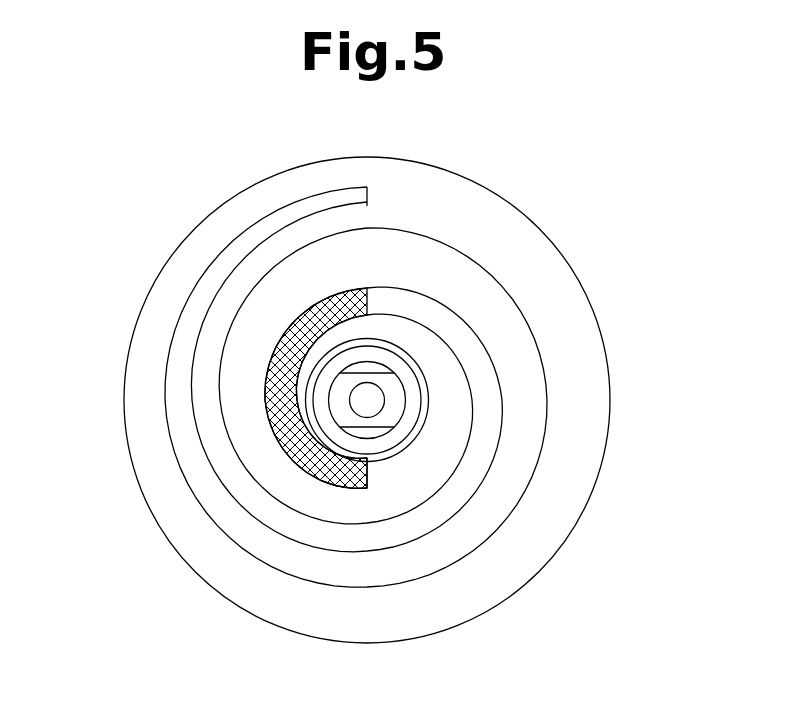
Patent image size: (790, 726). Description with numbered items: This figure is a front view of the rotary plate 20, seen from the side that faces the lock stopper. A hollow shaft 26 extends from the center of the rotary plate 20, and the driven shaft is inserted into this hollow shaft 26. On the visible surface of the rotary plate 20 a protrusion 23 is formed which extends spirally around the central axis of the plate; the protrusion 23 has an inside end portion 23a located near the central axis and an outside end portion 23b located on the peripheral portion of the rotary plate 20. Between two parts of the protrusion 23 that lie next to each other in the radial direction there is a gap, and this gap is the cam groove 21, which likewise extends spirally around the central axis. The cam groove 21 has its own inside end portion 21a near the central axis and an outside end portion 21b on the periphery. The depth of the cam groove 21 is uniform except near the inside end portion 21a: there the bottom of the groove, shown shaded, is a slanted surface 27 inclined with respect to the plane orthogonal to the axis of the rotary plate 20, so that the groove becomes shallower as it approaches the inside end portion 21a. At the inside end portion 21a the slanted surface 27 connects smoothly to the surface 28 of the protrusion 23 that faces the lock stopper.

The rotary plate 20 is at (495, 206).
The cam groove 21 is at (240, 265).
The inside end portion 21a is at (381, 471).
The outside end portion 21b is at (377, 218).
The protrusion 23 is at (262, 228).
The inside end portion 23a is at (334, 487).
The outside end portion 23b is at (371, 187).
The hollow shaft 26 is at (395, 380).
The slanted surface 27 is at (267, 415).
The surface of the protrusion 28 is at (452, 430).